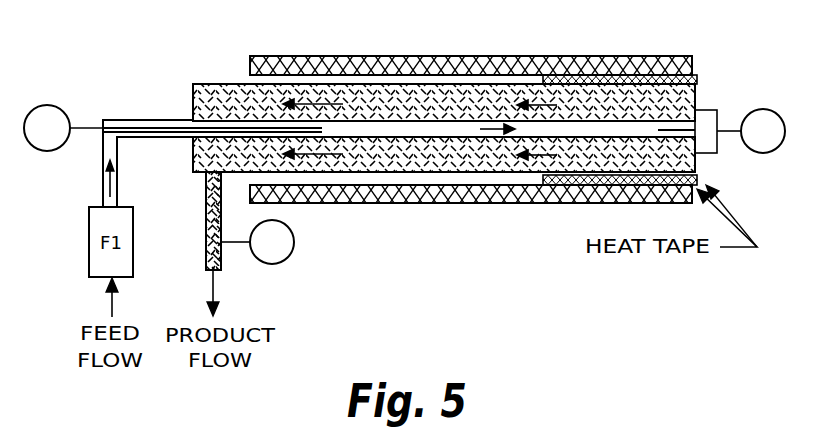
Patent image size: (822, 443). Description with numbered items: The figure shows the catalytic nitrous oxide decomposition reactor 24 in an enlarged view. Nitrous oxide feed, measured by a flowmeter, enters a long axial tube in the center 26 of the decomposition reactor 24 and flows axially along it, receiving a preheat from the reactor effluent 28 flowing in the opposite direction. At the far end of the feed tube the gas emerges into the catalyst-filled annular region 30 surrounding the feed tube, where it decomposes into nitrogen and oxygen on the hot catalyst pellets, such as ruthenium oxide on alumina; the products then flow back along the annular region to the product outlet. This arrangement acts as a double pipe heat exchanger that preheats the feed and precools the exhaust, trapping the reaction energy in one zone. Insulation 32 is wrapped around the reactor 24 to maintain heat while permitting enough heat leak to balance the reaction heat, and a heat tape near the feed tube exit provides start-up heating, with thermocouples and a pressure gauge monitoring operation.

The decomposition reactor 24 is at (570, 312).
The tube in the center 26 is at (150, 120).
The reactor effluent 28 is at (206, 260).
The catalyst-filled annular region 30 is at (665, 102).
The insulation 32 is at (390, 203).